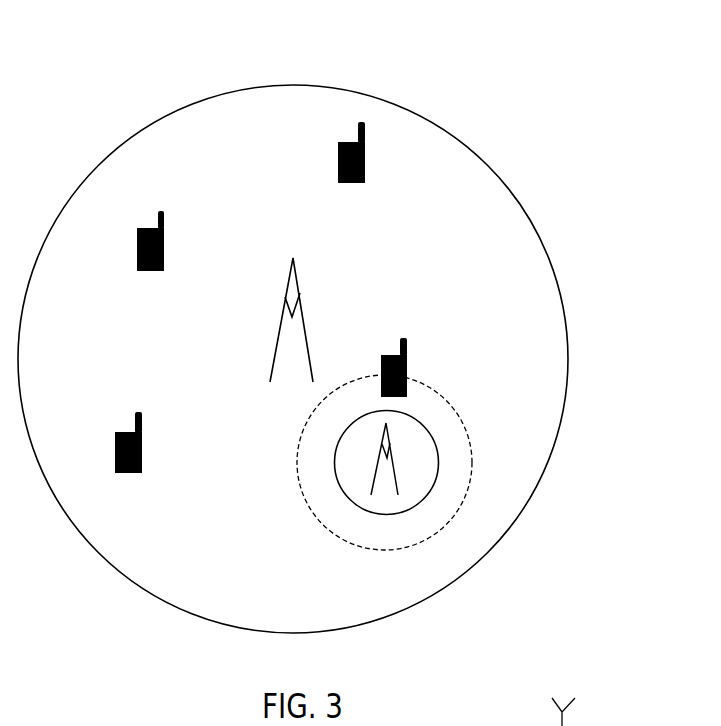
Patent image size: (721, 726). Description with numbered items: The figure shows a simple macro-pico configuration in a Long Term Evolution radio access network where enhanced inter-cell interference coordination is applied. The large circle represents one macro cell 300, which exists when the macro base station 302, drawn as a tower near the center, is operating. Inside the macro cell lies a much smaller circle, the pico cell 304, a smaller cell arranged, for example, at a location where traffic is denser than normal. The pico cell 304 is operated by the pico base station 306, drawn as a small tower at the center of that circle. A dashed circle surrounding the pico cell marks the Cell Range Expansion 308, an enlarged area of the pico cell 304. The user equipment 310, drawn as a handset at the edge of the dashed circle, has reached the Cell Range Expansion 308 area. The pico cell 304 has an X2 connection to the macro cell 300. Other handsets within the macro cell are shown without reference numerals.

The macro cell 300 is at (568, 340).
The macro base station 302 is at (300, 302).
The pico cell 304 is at (438, 470).
The pico base station 306 is at (382, 445).
The Cell Range Expansion 308 is at (447, 402).
The user equipment 310 is at (407, 363).